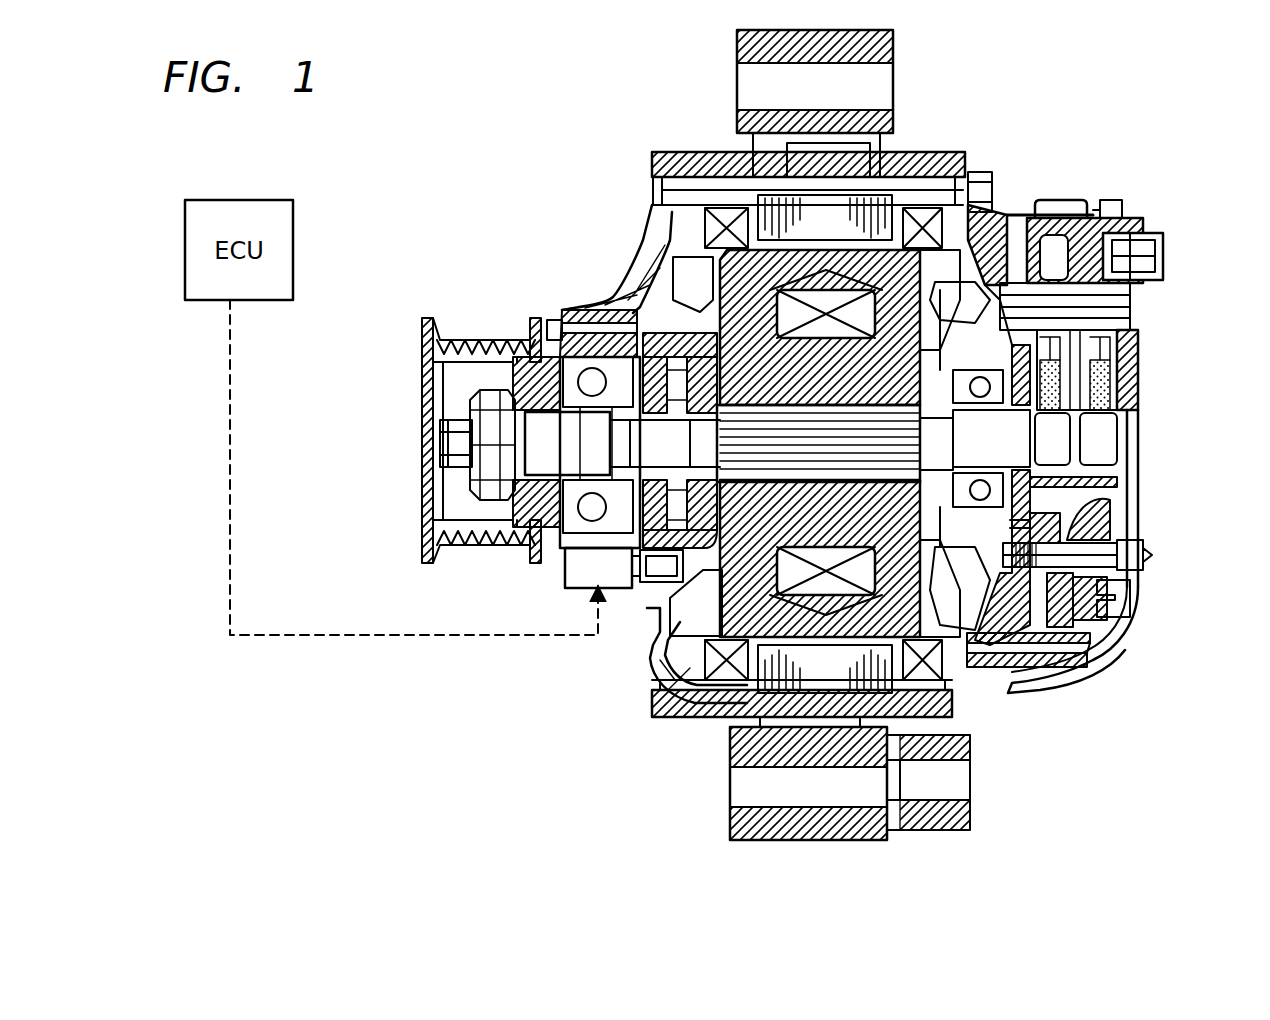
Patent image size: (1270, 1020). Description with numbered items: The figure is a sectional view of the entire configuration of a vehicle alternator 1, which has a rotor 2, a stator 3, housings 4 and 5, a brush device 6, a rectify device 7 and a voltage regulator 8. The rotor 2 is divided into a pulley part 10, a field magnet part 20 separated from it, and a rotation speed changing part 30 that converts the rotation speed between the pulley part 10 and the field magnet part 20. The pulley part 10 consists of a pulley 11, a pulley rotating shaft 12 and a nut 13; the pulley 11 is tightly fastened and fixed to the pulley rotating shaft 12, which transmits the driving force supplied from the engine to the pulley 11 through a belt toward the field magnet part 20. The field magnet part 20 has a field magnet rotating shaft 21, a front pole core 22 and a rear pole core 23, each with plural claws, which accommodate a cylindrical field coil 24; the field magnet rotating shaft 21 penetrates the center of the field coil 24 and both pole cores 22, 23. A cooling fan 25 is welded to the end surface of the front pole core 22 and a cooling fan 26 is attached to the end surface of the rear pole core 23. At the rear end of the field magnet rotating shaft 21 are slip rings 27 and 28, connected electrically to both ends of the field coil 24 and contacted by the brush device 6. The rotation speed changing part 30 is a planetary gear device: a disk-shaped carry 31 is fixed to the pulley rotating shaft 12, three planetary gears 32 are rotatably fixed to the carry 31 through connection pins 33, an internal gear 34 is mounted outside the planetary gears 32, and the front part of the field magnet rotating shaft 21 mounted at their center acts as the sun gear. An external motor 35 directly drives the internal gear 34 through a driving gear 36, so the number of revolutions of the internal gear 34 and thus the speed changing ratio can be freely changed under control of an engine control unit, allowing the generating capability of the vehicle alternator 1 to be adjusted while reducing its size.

The vehicle alternator 1 is at (1150, 120).
The rotor 2 is at (690, 232).
The stator 3 is at (902, 190).
The housing 4 is at (652, 222).
The housing 5 is at (995, 222).
The brush device 6 is at (1142, 352).
The rectify device 7 is at (1112, 626).
The voltage regulator 8 is at (1137, 228).
The pulley part 10 is at (463, 322).
The pulley 11 is at (424, 326).
The pulley rotating shaft 12 is at (535, 444).
The nut 13 is at (486, 484).
The field magnet part 20 is at (682, 672).
The field magnet rotating shaft 21 is at (868, 460).
The front pole core 22 is at (735, 660).
The rear pole core 23 is at (950, 755).
The field coil 24 is at (810, 570).
The cooling fan 25 is at (678, 632).
The cooling fan 26 is at (995, 670).
The slip ring 27 is at (1058, 428).
The slip ring 28 is at (1105, 455).
The rotation speed changing part 30 is at (635, 590).
The carry 31 is at (598, 333).
The planetary gear 32 is at (617, 552).
The connection pin 33 is at (598, 588).
The internal gear 34 is at (655, 333).
The external motor 35 is at (570, 570).
The driving gear 36 is at (660, 588).